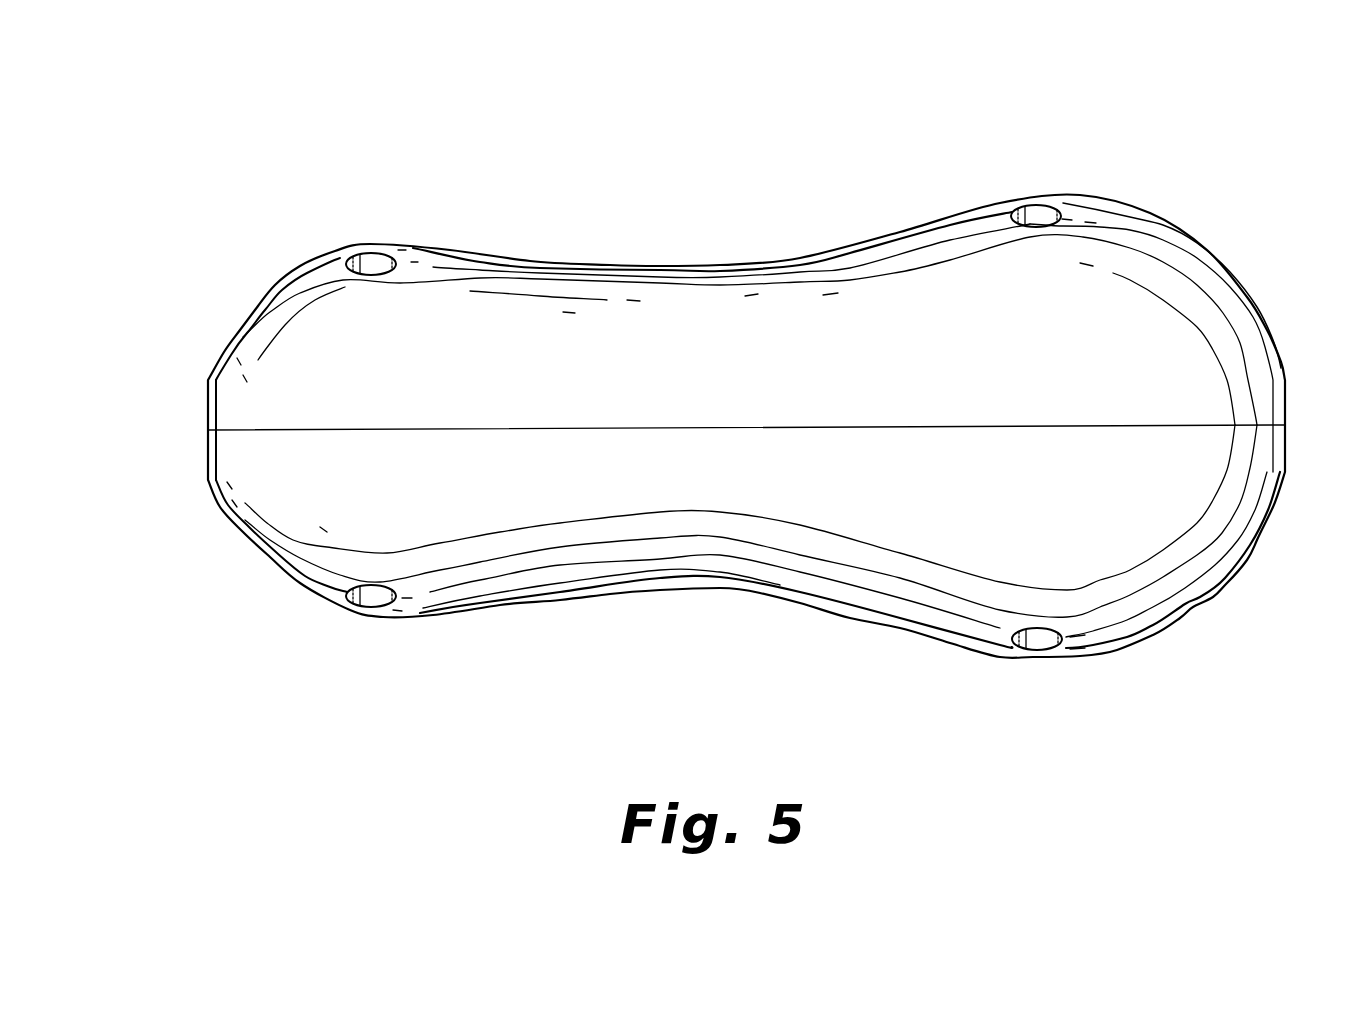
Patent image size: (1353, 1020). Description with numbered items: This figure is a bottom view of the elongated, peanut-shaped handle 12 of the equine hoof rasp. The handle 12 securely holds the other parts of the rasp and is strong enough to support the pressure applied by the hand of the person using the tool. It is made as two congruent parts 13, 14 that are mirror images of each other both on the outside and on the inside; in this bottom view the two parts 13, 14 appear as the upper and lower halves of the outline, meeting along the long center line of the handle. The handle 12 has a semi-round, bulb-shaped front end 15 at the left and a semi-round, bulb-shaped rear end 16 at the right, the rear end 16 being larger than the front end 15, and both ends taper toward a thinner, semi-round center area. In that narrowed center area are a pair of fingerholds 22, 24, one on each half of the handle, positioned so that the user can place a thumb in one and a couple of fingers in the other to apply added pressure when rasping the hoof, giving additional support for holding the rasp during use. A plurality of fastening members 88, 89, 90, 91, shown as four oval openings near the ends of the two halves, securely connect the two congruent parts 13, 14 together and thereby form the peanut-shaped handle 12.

The peanut-shaped handle 12 is at (206, 106).
The congruent part 13 is at (851, 245).
The congruent part 14 is at (904, 629).
The front end 15 is at (204, 315).
The rear end 16 is at (1256, 604).
The fingerhold 22 is at (660, 591).
The fingerhold 24 is at (654, 266).
The fastening member 88 is at (1044, 652).
The fastening member 89 is at (1040, 204).
The fastening member 90 is at (376, 608).
The fastening member 91 is at (366, 244).